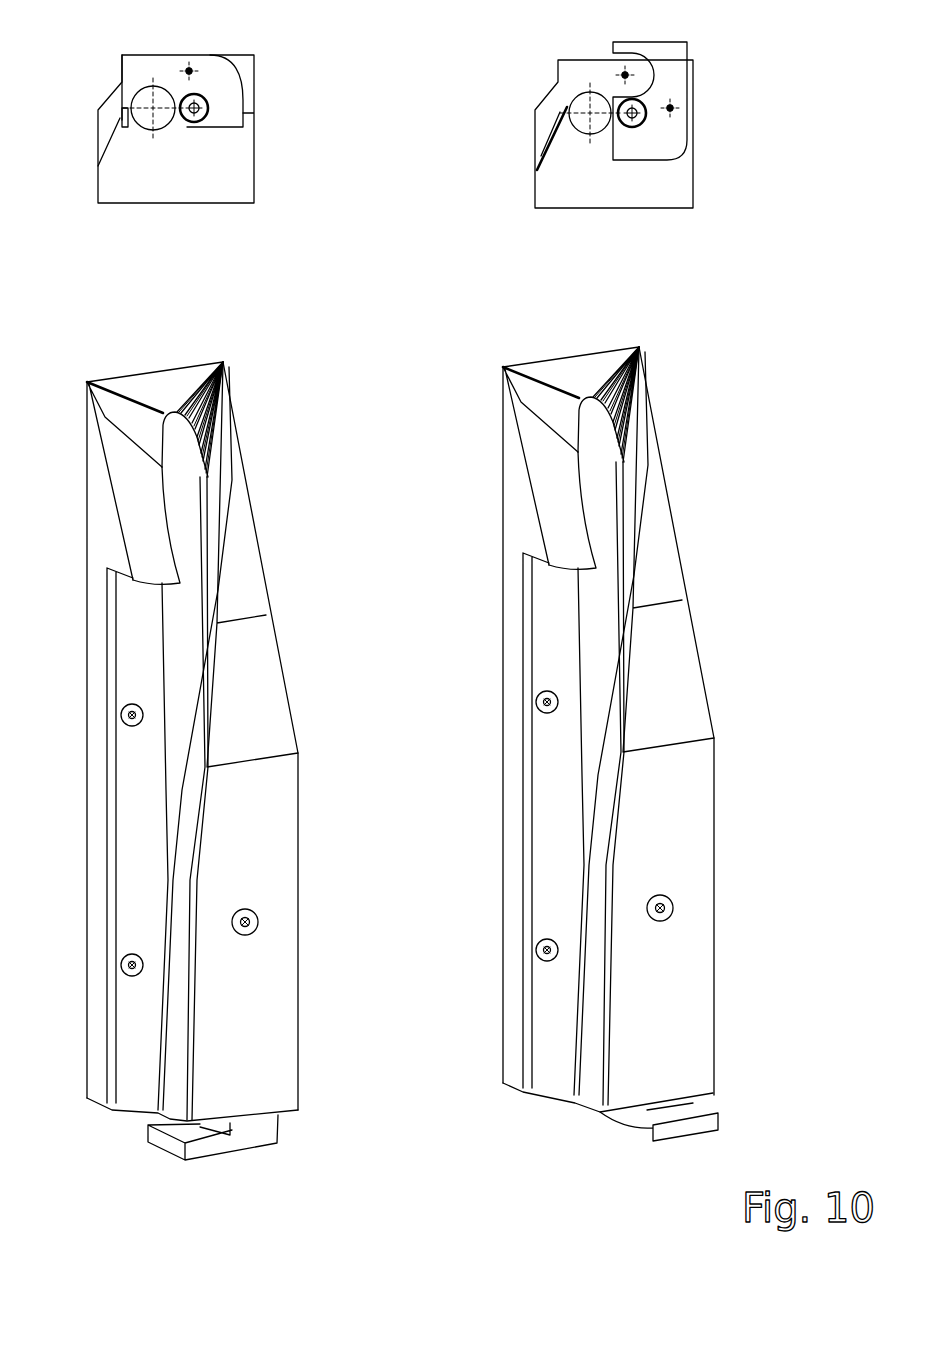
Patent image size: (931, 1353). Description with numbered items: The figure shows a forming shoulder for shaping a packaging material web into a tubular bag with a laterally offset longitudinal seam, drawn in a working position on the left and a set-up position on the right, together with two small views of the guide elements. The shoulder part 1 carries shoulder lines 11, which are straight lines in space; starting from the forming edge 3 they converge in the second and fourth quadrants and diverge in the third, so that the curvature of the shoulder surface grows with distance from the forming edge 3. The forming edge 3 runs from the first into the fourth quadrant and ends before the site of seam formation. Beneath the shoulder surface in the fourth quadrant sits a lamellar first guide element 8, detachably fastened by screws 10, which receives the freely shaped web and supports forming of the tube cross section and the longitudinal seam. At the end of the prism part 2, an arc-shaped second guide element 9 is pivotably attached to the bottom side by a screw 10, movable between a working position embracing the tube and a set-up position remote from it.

The shoulder part 1 is at (170, 380).
The prism part 2 is at (187, 462).
The forming edge 3 is at (168, 510).
The first guide element 8 is at (137, 820).
The second guide element 9 is at (222, 1148).
The screws 10 is at (123, 722).
The shoulder lines 11 is at (143, 453).